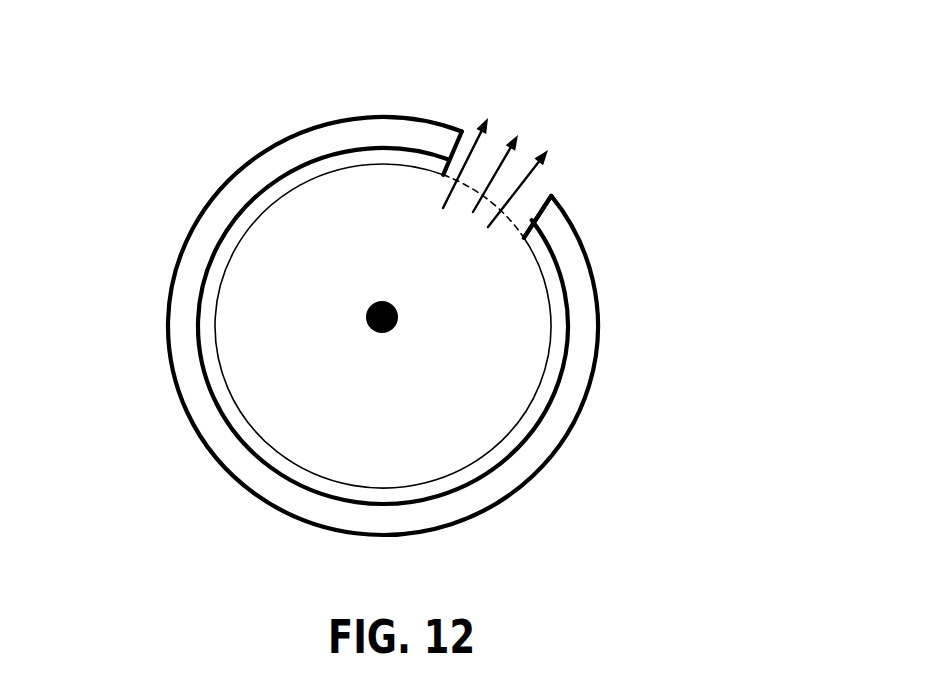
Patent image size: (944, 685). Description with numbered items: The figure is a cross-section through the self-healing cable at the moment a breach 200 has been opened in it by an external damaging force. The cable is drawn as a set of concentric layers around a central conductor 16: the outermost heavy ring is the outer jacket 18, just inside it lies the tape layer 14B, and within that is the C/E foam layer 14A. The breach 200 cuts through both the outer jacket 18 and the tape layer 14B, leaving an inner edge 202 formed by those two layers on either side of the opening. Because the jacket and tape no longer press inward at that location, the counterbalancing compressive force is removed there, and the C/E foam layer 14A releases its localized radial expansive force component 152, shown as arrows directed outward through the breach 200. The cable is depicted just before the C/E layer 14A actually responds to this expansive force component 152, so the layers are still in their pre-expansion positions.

The outer jacket 18 is at (337, 117).
The tape layer 14B is at (260, 187).
The C/E foam layer 14A is at (503, 277).
The center point 16 is at (398, 317).
The localized radial expansive force component 152 is at (567, 158).
The breach 200 is at (470, 73).
The inner edge 202 is at (539, 192).